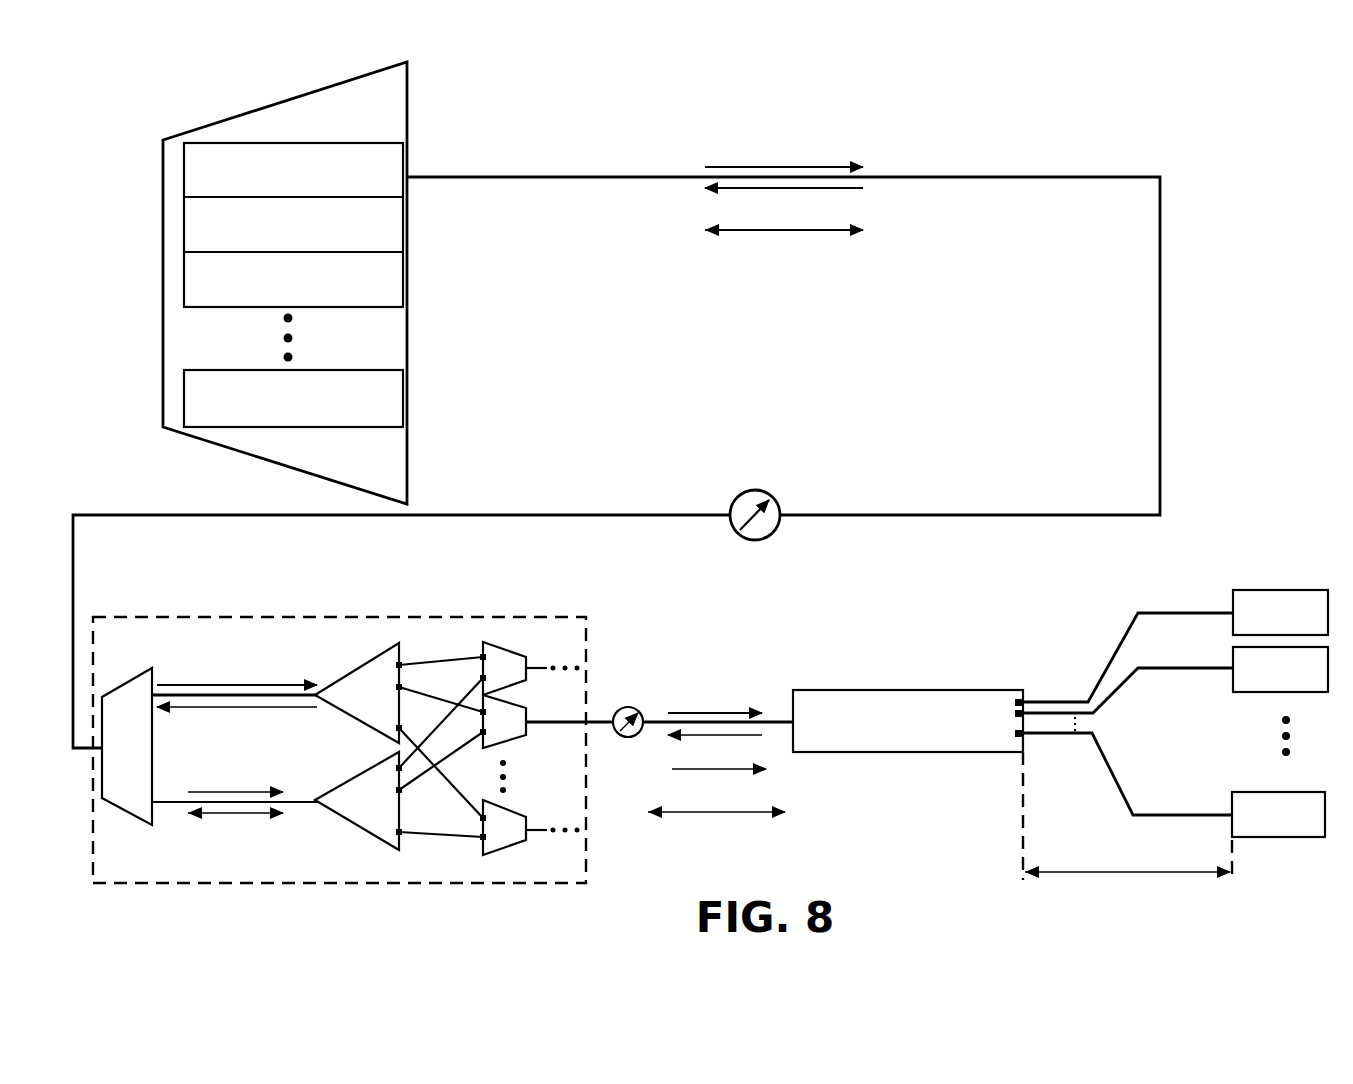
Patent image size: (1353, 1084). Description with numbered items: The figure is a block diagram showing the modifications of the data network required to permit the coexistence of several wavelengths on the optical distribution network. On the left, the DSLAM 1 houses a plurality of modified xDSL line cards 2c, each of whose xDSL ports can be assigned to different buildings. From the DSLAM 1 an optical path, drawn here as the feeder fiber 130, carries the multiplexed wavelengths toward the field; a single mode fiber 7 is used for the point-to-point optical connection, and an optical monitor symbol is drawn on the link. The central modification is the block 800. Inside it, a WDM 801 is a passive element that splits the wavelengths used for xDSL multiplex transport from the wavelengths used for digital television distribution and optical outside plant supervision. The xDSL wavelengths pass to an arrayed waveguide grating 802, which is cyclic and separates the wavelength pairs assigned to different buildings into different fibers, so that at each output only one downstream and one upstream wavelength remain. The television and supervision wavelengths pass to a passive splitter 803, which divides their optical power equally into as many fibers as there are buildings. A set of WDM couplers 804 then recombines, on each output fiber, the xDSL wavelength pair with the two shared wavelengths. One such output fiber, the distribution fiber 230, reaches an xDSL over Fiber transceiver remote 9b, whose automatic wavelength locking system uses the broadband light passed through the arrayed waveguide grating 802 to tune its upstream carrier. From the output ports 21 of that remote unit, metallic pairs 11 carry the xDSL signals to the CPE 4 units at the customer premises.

The DSLAM 1 is at (170, 132).
The modified xDSL line card 2c is at (182, 178).
The feeder optical fiber 130 is at (423, 173).
The Single Mode Fiber 7 is at (738, 491).
The block 800 is at (328, 615).
The WDM 801 is at (122, 684).
The Arrayed Waveguide Grating 802 is at (372, 656).
The passive splitter 803 is at (352, 822).
The WDM couplers 804 is at (518, 684).
The distribution optical fiber 230 is at (790, 700).
The xDSL over Fiber transceiver—Remote 9b is at (883, 689).
The output port 21 is at (1028, 697).
The metallic pair 11 is at (1116, 659).
The CPE 4 is at (1268, 588).